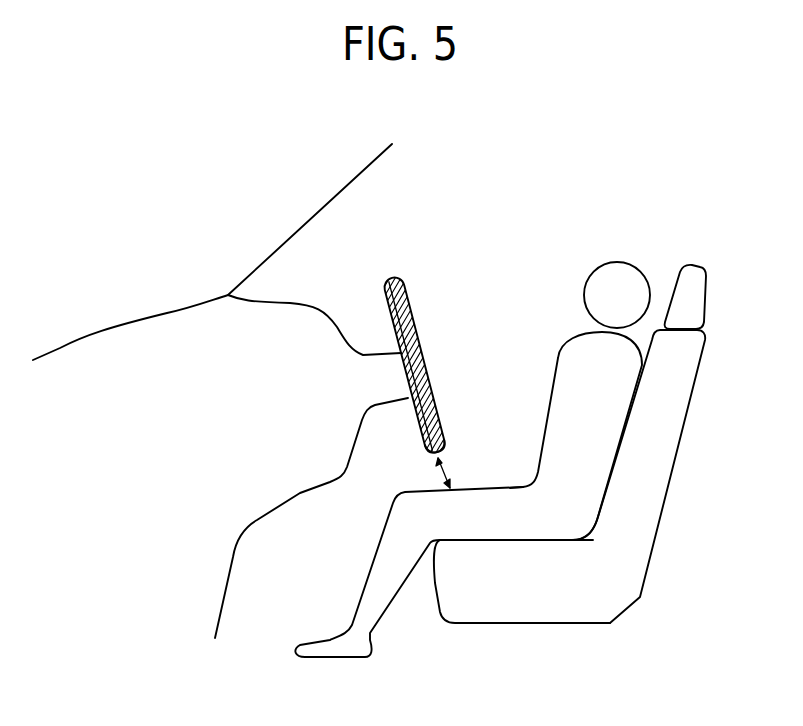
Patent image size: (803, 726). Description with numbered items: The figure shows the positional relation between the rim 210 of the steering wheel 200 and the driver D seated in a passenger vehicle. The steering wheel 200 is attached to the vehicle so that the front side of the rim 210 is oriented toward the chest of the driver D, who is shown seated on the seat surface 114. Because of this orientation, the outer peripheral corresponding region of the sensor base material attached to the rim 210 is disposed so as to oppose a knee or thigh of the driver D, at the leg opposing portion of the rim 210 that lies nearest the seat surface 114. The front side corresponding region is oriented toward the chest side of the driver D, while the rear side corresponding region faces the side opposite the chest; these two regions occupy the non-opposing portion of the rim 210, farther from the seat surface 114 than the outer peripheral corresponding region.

The rim 210 is at (445, 355).
The steering wheel 200 is at (445, 355).
The seat surface 114 is at (490, 543).
The driver D is at (617, 368).